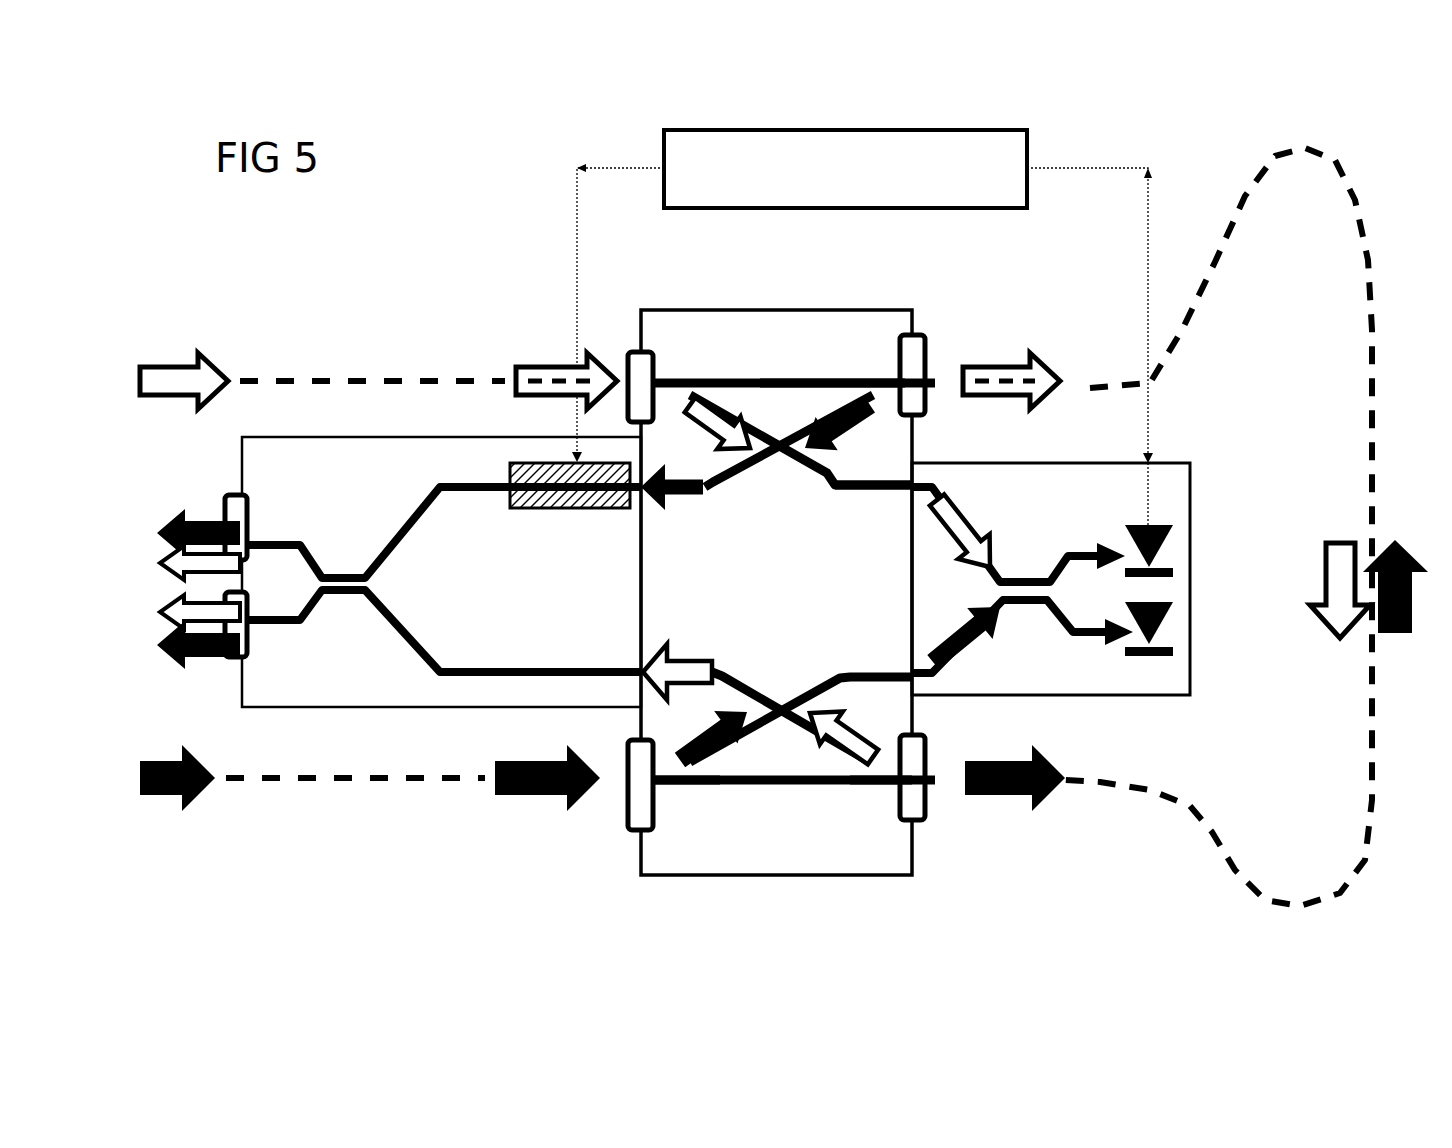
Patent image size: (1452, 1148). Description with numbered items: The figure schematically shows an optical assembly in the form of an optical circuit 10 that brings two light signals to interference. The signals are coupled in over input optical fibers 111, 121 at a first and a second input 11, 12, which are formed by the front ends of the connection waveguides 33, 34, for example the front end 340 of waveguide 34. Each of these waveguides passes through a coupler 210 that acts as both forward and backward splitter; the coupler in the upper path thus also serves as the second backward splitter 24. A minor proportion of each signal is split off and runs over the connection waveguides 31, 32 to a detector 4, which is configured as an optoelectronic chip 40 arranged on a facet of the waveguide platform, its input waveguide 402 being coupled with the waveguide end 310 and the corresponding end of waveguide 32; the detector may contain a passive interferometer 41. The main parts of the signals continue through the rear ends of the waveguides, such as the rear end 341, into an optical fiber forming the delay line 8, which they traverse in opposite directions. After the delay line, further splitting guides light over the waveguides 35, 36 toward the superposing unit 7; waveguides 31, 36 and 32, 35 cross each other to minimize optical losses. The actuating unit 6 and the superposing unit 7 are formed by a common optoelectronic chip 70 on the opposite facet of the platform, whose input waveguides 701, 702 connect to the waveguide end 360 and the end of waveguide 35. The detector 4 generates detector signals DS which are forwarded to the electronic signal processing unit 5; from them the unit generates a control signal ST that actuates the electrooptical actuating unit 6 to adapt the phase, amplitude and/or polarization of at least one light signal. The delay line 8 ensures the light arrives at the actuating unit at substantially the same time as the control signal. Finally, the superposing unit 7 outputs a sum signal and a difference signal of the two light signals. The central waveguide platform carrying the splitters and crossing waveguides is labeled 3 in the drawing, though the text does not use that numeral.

The electronic signal processing unit 5 is at (997, 163).
The optical circuit 10 is at (1130, 133).
The control signal ST is at (580, 285).
The detector signals DS is at (1153, 268).
The optoelectronic chip 70 is at (426, 425).
The superposing unit 7 is at (344, 550).
The input waveguide of the chip 701 is at (637, 490).
The input waveguide of the chip 702 is at (530, 667).
The electrooptical actuating unit 6 is at (528, 460).
The optical fiber 111 is at (298, 378).
The optical fiber 121 is at (362, 782).
The switching chip 3 is at (776, 592).
The first input 11 is at (646, 352).
The second input 12 is at (640, 822).
The connection waveguide 33 is at (752, 378).
The first coupler 210 is at (815, 378).
The second backward splitter 24 is at (963, 372).
The connection waveguide 31 is at (825, 468).
The waveguide 36 is at (727, 480).
The end of waveguide 36 360 is at (711, 500).
The end of waveguide 31 310 is at (880, 493).
The connection waveguide 32 is at (800, 700).
The waveguide 35 is at (740, 692).
The connection waveguide 34 is at (797, 795).
The front end of waveguide 34 340 is at (688, 790).
The rear end of waveguide 34 341 is at (890, 790).
The optoelectronic chip 40 is at (1182, 452).
The detector 4 is at (1081, 455).
The interferometer 41 is at (1030, 560).
The input waveguide of the chip 402 is at (1010, 620).
The delay line 8 is at (1377, 430).